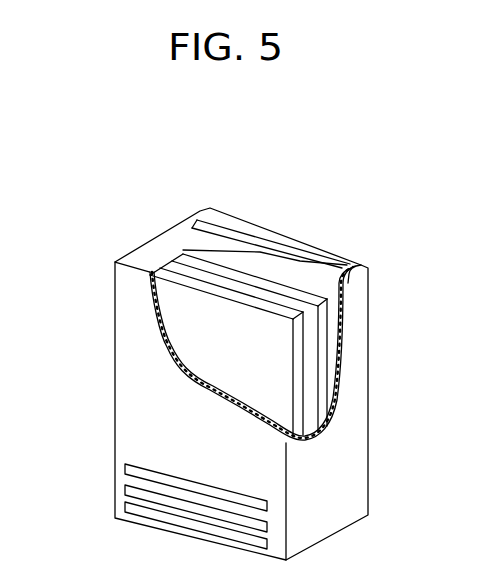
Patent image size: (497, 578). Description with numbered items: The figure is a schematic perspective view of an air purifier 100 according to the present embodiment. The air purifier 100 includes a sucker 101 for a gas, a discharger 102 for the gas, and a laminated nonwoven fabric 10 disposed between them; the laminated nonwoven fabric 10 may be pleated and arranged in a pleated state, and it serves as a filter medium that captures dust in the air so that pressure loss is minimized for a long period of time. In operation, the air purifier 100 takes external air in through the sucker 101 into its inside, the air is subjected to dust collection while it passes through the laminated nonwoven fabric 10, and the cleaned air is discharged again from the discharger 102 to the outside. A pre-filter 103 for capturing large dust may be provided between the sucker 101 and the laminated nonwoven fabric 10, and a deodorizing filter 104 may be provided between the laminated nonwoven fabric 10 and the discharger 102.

The air purifier 100 is at (322, 190).
The sucker 101 is at (98, 458).
The discharger 102 is at (218, 227).
The laminated nonwoven fabric 10 is at (183, 252).
The pre-filter 103 is at (193, 334).
The deodorizing filter 104 is at (343, 298).